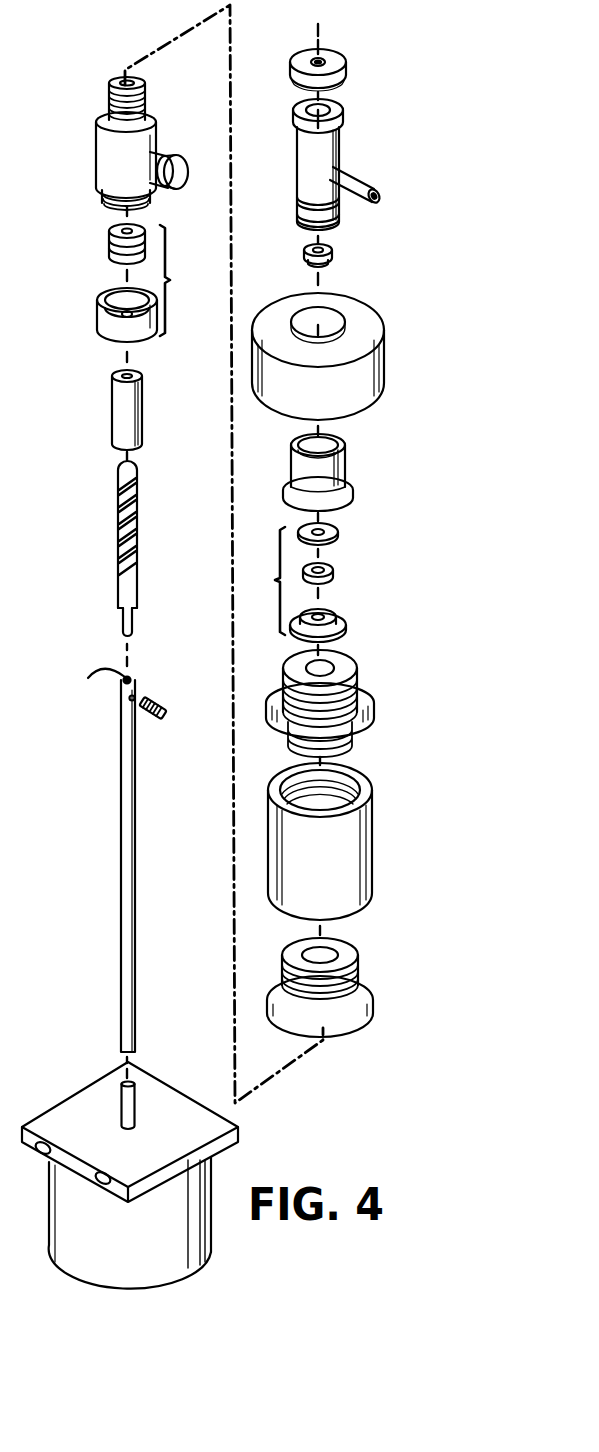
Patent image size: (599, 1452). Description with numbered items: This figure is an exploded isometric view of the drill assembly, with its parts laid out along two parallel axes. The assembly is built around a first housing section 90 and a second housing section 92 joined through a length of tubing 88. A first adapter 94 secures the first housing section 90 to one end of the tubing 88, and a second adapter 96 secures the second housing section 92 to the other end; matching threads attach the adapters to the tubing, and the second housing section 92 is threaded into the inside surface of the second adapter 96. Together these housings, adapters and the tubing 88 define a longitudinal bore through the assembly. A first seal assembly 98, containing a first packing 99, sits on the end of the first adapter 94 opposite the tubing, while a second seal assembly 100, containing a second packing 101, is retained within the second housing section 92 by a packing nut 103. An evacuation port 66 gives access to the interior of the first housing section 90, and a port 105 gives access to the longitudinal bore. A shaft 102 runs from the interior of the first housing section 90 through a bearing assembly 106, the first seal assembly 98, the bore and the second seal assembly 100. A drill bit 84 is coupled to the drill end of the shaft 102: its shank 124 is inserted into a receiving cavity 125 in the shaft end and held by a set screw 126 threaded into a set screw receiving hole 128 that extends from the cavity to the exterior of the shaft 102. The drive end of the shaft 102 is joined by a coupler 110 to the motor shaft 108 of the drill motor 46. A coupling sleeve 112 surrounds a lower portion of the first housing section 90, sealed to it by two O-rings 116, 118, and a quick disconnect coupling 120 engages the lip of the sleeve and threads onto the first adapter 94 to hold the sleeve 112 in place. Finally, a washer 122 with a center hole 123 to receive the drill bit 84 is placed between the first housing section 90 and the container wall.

The drill motor 46 is at (138, 1258).
The evacuation port 66 is at (363, 174).
The drill bit 84 is at (118, 572).
The tubing 88 is at (358, 900).
The first housing section 90 is at (298, 143).
The second housing section 92 is at (96, 152).
The first adapter 94 is at (349, 667).
The second adapter 96 is at (348, 1025).
The first seal assembly 98 is at (297, 582).
The first packing 99 is at (332, 567).
The second seal assembly 100 is at (186, 280).
The second packing 101 is at (108, 247).
The shaft 102 is at (122, 980).
The packing nut 103 is at (96, 318).
The port 105 is at (171, 155).
The bearing assembly 106 is at (334, 263).
The motor shaft 108 is at (122, 1107).
The coupler 110 is at (112, 400).
The coupling sleeve 112 is at (346, 462).
The O-ring 116 is at (298, 197).
The O-ring 118 is at (298, 216).
The quick disconnect coupling 120 is at (280, 308).
The washer 122 is at (296, 58).
The center hole 123 is at (322, 60).
The shank 124 is at (134, 623).
The receiving cavity 125 is at (95, 691).
The set screw 126 is at (175, 690).
The set screw receiving hole 128 is at (134, 697).